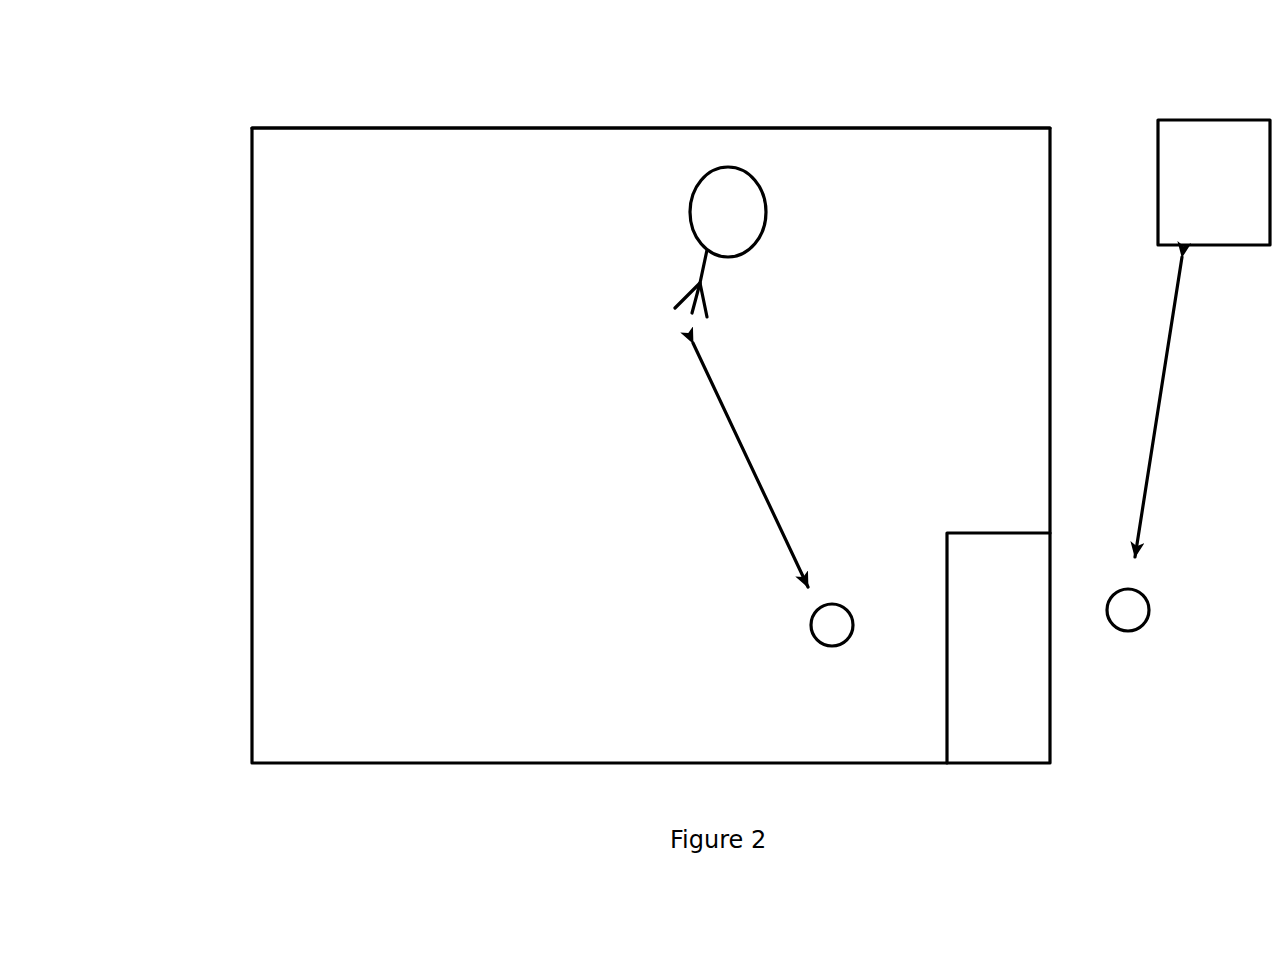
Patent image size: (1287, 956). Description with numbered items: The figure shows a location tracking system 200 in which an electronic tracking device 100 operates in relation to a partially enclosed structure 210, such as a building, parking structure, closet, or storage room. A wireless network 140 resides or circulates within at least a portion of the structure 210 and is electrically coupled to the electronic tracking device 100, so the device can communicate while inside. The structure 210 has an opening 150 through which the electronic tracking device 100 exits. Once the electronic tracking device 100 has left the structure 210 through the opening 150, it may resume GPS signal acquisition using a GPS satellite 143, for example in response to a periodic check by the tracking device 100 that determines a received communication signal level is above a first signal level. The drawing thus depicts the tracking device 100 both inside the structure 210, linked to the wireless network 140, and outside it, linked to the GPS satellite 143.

The electronic tracking device 100 is at (792, 638).
The wireless network 140 is at (765, 225).
The GPS satellite 143 is at (1213, 120).
The opening 150 is at (1005, 703).
The monitored area 200 is at (234, 592).
The partially enclosed structure 210 is at (388, 128).